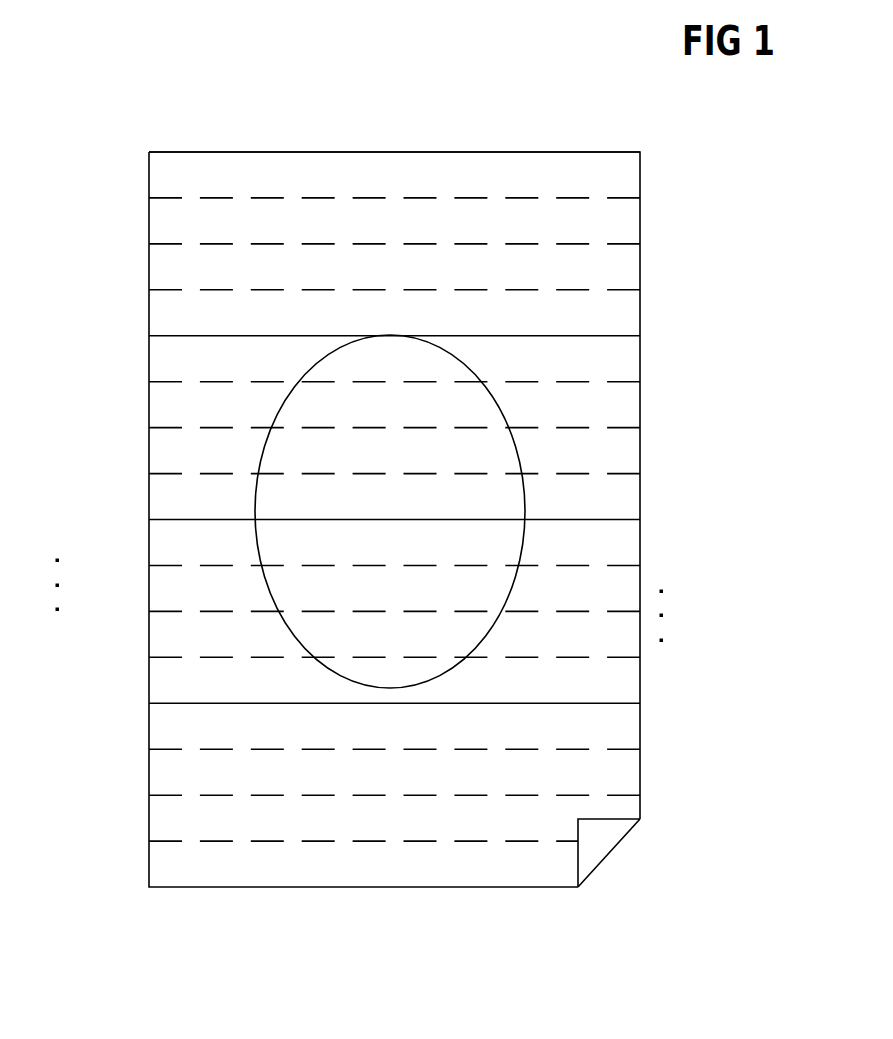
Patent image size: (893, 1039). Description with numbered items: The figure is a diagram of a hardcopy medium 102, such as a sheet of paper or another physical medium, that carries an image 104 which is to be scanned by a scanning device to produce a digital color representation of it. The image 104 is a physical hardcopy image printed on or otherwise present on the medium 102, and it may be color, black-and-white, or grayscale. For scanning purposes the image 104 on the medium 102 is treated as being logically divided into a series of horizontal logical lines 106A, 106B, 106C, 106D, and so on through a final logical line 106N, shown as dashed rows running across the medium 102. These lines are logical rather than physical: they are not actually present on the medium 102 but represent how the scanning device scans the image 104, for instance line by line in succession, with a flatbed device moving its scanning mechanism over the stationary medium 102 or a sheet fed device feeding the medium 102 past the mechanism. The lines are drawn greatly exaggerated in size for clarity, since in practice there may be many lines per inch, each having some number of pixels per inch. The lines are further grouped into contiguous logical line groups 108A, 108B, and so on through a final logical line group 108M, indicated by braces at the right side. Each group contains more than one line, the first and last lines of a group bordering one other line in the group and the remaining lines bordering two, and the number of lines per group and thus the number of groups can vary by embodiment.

The hardcopy medium 102 is at (537, 152).
The image 104 is at (372, 547).
The logical line 106A is at (124, 175).
The logical line 106B is at (124, 221).
The logical line 106C is at (124, 267).
The logical line 106D is at (124, 313).
The logical line 106N is at (124, 863).
The logical line group 108A is at (652, 152).
The logical line group 108B is at (652, 336).
The logical line group 108M is at (652, 703).